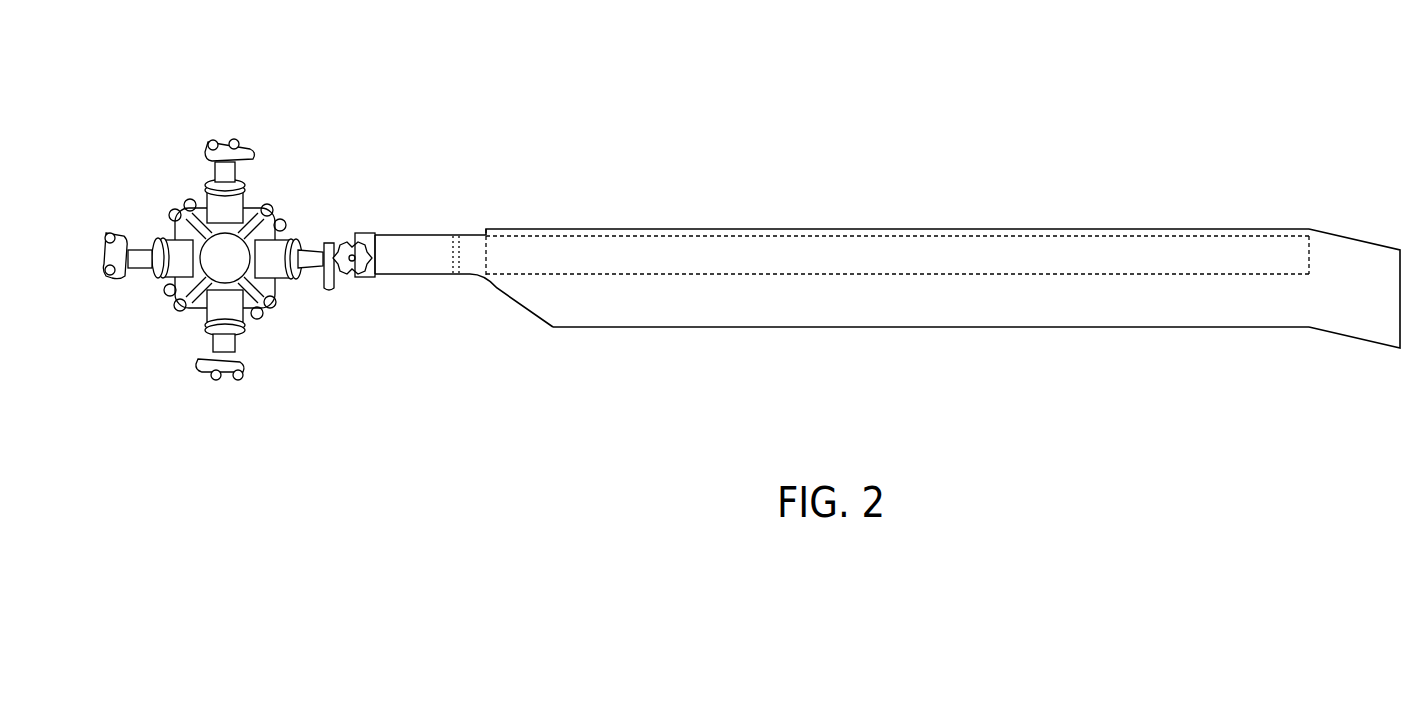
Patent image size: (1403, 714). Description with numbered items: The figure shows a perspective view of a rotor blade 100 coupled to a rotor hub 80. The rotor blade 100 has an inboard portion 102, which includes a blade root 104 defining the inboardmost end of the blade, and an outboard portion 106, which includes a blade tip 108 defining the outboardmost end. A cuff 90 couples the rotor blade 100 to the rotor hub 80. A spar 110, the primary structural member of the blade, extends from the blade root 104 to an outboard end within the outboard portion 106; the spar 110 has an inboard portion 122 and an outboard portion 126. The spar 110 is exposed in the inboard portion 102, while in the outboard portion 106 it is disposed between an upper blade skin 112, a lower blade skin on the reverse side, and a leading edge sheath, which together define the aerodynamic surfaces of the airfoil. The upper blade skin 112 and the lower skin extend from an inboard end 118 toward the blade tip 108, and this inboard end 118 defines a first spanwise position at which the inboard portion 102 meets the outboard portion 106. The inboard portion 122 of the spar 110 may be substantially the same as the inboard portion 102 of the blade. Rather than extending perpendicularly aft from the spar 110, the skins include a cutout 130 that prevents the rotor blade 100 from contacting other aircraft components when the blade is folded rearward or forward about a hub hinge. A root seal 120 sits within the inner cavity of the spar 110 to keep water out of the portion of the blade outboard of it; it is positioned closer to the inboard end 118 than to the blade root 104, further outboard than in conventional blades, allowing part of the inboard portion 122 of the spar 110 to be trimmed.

The rotor hub 80 is at (249, 133).
The cuff 90 is at (348, 265).
The rotor blade 100 is at (751, 234).
The inboard portion 102 is at (915, 283).
The blade root 104 is at (356, 233).
The outboard portion 106 is at (1001, 217).
The blade tip 108 is at (1310, 275).
The spar 110 is at (820, 275).
The upper blade skin 112 is at (597, 308).
The inboard end 118 is at (470, 276).
The root seal 120 is at (460, 237).
The inboard portion of the spar 122 is at (432, 276).
The outboard portion of the spar 126 is at (715, 275).
The cutout 130 is at (504, 337).